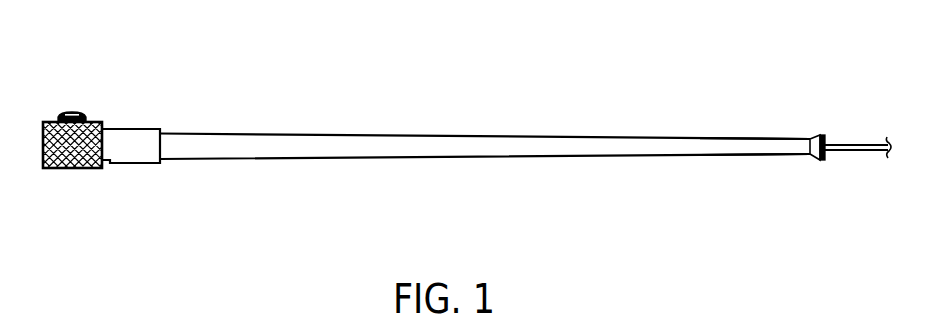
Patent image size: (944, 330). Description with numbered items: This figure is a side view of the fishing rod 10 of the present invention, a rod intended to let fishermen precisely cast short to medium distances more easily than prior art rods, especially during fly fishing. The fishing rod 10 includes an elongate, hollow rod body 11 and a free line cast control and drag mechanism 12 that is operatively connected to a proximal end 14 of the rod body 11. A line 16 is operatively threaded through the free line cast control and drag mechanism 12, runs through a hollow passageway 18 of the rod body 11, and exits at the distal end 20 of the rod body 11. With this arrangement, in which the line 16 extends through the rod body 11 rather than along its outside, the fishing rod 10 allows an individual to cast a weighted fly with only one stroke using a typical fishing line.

The fishing rod 10 is at (113, 71).
The rod body 11 is at (438, 158).
The free line cast control and drag mechanism 12 is at (72, 168).
The proximal end 14 is at (135, 163).
The line 16 is at (855, 152).
The hollow passageway 18 is at (816, 131).
The distal end 20 is at (778, 157).